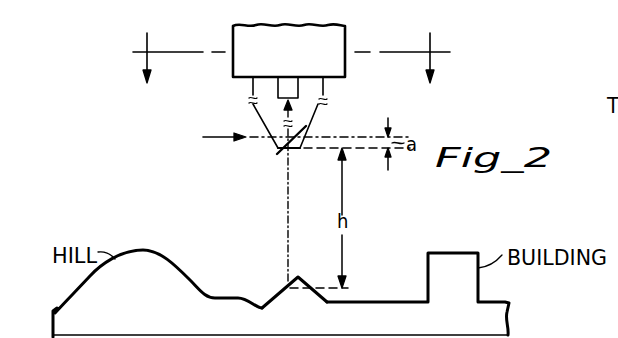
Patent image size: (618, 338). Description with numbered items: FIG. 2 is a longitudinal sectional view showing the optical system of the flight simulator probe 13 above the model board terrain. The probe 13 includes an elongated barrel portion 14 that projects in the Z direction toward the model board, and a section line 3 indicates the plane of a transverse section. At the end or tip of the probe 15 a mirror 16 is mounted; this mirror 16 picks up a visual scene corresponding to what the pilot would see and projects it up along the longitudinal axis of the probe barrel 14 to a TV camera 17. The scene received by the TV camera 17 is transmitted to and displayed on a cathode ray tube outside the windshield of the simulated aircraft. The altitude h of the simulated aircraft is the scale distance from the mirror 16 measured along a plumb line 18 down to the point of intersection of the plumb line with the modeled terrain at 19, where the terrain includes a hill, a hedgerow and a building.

The section line 3- 3 is at (288, 56).
The probe 13 is at (294, 25).
The elongated barrel portion 14 is at (330, 88).
The probe tip 15 is at (279, 153).
The mirror 16 is at (327, 109).
The TV camera 17 is at (256, 88).
The plumb line 18 is at (289, 232).
The point of intersection 19 is at (297, 299).